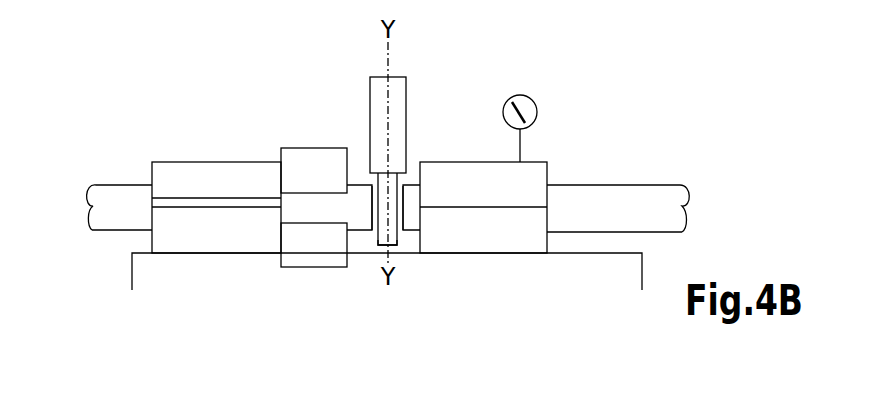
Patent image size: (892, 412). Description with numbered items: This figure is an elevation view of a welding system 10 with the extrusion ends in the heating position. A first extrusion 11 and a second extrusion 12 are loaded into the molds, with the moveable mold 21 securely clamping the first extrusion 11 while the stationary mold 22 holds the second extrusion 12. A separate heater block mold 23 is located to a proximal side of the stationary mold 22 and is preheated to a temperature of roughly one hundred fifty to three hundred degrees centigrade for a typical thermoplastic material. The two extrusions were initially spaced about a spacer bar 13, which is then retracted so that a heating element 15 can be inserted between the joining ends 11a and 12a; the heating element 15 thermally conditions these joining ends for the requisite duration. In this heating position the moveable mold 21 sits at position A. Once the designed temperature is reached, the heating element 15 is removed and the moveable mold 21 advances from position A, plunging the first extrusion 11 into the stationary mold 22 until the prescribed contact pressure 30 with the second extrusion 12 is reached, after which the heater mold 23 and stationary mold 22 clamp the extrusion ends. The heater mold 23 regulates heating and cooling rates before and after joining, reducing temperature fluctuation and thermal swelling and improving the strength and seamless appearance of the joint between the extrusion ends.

The cutting apparatus 10 is at (307, 72).
The first extrusion end 11 is at (641, 185).
The extrusion joining end 11a is at (403, 230).
The second extrusion end 12 is at (120, 185).
The extrusion joining end 12a is at (373, 236).
The spacer bar 13 is at (393, 88).
The heating element 15 is at (392, 238).
The moveable mold 21 is at (507, 162).
The stationary mold 22 is at (228, 162).
The heater block mold 23 is at (312, 148).
The prescribed contact pressure 30 is at (532, 100).
The position A is at (403, 229).